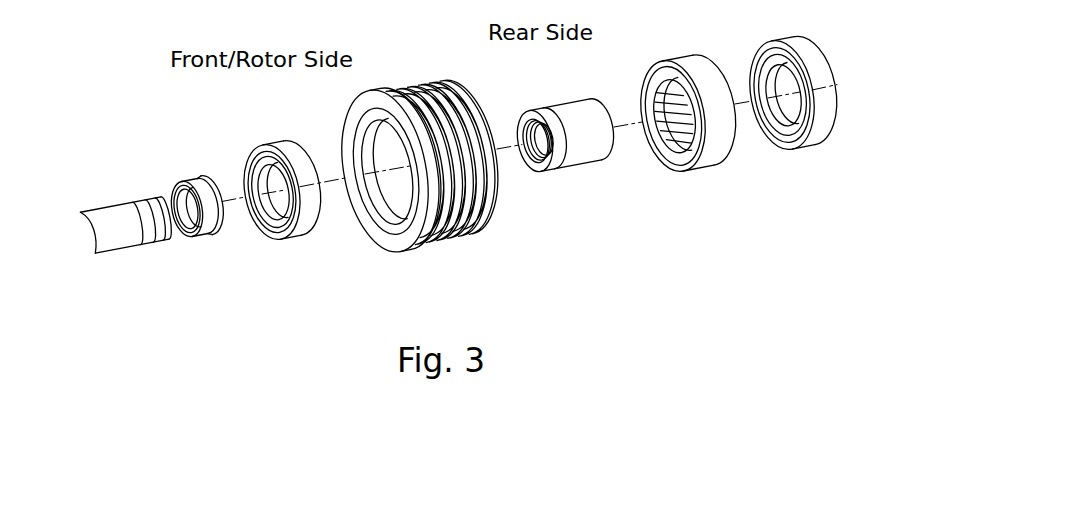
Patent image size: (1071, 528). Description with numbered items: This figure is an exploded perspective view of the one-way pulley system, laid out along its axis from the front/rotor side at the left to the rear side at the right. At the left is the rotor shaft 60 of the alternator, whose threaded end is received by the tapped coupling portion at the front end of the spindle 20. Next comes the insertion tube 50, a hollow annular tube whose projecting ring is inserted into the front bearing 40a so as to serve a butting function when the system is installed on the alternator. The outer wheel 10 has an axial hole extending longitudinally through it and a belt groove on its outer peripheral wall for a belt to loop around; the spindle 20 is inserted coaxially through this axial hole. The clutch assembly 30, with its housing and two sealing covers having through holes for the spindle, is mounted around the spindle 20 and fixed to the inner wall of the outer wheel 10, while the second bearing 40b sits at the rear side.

The outer wheel 10 is at (396, 160).
The spindle 20 is at (568, 158).
The clutch assembly 30 is at (686, 138).
The bearing 40a is at (312, 217).
The bearing 40b is at (817, 133).
The insertion tube 50 is at (212, 237).
The rotor shaft 60 is at (134, 193).